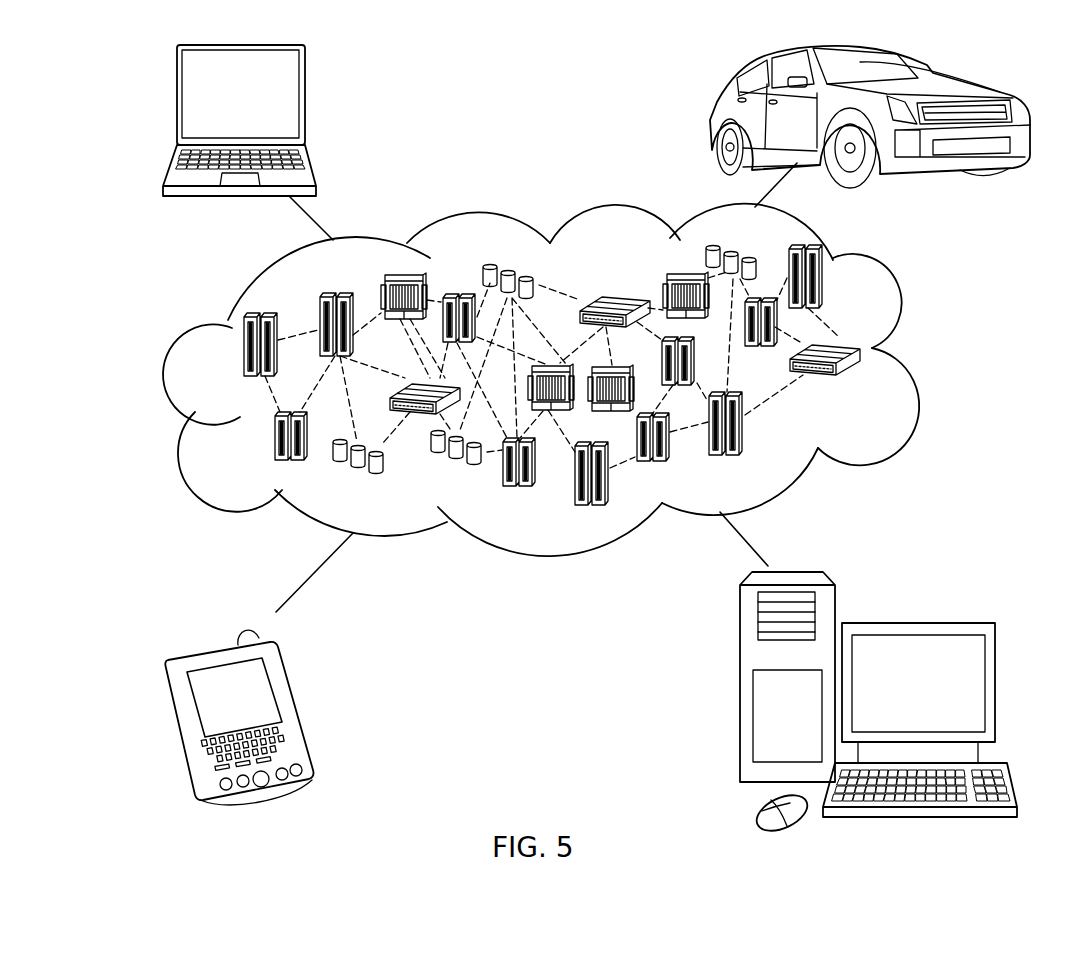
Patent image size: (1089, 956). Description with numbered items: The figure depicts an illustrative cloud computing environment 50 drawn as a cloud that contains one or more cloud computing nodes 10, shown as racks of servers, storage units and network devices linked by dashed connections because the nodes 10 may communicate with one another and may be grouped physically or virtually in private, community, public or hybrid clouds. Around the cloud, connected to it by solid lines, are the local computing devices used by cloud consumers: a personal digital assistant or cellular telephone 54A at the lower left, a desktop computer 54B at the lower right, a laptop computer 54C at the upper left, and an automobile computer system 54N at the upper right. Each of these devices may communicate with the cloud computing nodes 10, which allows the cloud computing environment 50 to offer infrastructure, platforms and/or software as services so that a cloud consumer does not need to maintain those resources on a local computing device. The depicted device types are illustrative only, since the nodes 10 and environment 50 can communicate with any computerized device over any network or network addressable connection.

The cloud computing node 10 is at (862, 384).
The cloud computing environment 50 is at (917, 352).
The personal digital assistant (PDA) or cellular telephone 54A is at (296, 711).
The desktop computer 54B is at (915, 623).
The laptop computer 54C is at (307, 102).
The automobile computer system 54N is at (710, 113).